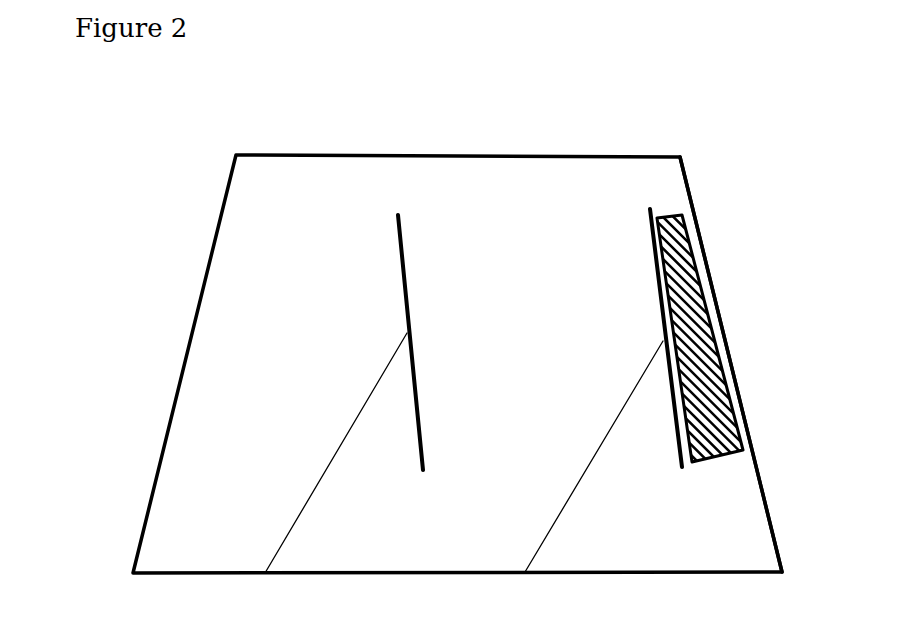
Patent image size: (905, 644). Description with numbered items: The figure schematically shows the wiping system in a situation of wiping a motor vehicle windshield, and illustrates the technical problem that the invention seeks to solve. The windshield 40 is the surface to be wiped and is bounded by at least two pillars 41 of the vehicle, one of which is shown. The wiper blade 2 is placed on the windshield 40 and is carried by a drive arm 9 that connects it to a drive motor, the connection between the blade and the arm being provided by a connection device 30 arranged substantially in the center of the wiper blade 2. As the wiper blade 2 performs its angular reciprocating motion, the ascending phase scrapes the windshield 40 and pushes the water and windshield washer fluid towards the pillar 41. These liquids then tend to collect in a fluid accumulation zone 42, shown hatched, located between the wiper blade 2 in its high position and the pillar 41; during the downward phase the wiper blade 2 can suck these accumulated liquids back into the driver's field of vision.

The wiper blade 2 is at (660, 310).
The drive arm 9 is at (585, 473).
The connection device 30 is at (660, 341).
The windshield 40 is at (257, 310).
The pillar 41 is at (688, 187).
The fluid accumulation zone 42 is at (708, 338).